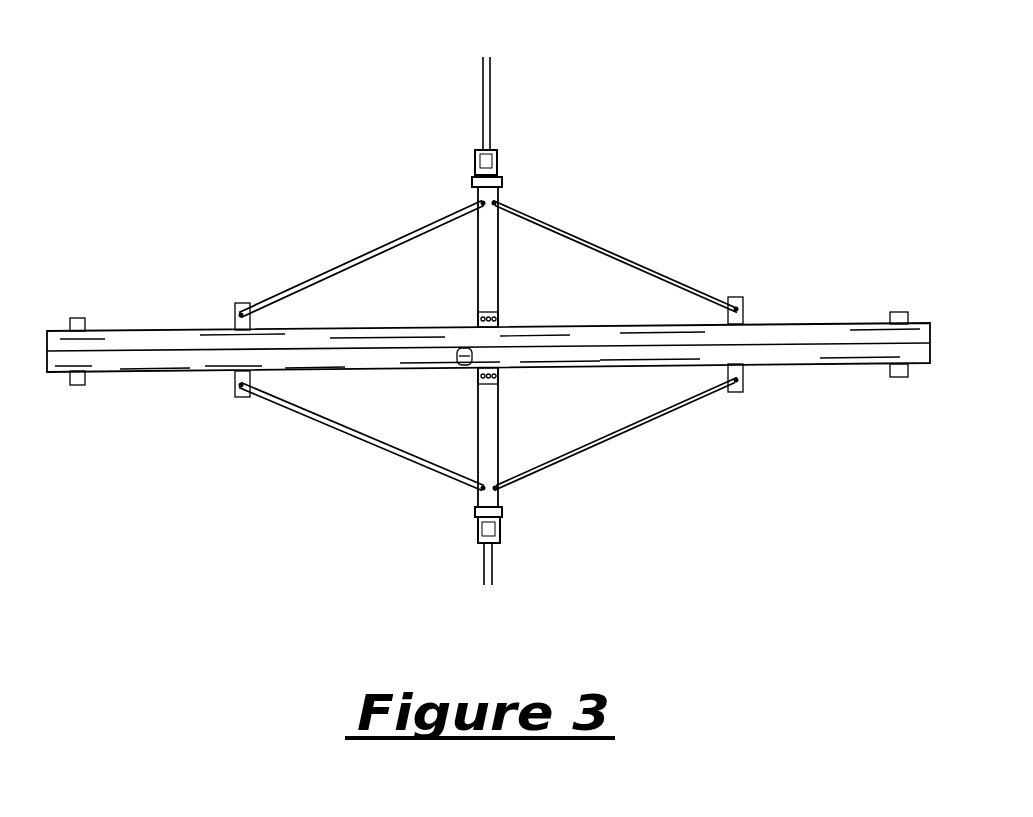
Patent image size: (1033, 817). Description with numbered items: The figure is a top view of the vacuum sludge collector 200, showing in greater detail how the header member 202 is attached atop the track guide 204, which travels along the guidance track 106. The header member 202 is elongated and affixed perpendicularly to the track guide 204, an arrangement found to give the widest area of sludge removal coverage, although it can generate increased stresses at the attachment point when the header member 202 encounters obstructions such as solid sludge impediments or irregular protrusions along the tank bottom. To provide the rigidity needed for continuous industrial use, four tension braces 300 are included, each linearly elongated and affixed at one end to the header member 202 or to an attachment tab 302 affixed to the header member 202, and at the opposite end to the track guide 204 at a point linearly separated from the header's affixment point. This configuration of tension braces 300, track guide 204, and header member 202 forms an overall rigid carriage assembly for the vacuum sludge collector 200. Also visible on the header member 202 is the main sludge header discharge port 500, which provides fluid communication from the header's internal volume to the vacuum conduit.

The guidance track 106 is at (492, 100).
The vacuum sludge collector 200 is at (612, 170).
The header member 202 is at (122, 362).
The track guide 204 is at (499, 450).
The tension brace 300 is at (680, 282).
The attachment tab 302 is at (897, 312).
The main sludge header discharge port 500 is at (463, 368).